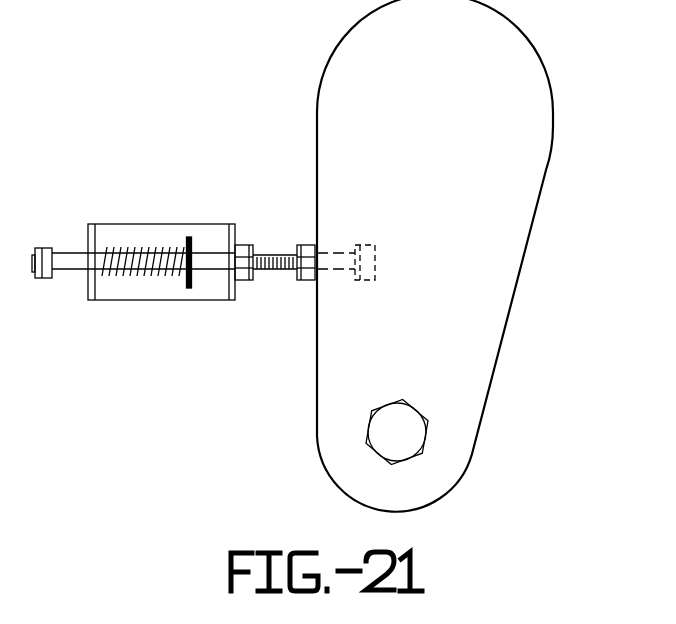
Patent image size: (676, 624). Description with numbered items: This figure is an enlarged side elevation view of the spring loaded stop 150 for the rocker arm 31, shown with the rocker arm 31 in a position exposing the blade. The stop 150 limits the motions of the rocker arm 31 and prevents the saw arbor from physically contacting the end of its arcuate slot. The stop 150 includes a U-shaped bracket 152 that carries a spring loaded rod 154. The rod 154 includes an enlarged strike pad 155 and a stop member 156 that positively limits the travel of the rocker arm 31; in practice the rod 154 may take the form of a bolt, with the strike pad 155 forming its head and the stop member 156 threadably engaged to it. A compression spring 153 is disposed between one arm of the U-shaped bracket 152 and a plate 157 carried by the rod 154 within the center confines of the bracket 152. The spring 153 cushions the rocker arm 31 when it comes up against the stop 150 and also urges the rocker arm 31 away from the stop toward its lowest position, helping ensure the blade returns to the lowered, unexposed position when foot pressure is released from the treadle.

The rocker arm 31 is at (522, 158).
The spring loaded stop 150 is at (172, 128).
The U-shaped bracket 152 is at (102, 223).
The compression spring 153 is at (156, 250).
The spring loaded rod 154 is at (272, 253).
The strike pad 155 is at (305, 281).
The stop member 156 is at (243, 281).
The plate 157 is at (188, 237).